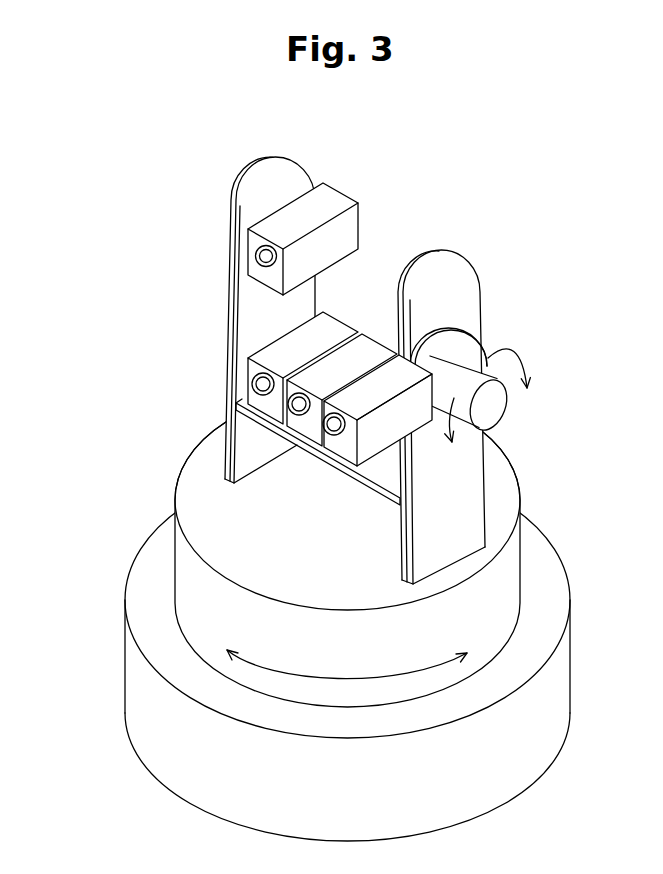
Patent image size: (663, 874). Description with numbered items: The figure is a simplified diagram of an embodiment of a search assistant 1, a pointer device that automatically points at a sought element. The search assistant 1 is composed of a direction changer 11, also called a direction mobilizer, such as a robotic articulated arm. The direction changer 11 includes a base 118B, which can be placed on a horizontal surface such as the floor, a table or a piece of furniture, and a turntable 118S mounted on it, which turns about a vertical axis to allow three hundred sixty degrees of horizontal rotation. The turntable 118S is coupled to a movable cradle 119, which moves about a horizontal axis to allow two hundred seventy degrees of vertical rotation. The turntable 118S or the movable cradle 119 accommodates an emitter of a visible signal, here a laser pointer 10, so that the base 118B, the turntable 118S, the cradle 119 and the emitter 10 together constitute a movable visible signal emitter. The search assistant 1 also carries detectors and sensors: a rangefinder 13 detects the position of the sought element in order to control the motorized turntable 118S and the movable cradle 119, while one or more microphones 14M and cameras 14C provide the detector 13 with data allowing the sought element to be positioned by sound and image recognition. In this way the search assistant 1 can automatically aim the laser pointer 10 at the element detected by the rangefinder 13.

The search assistant 1 is at (340, 498).
The laser pointer 10 is at (297, 389).
The direction changer 11 is at (340, 498).
The rangefinder 13 is at (300, 456).
The microphone 14M is at (270, 277).
The camera 14C is at (292, 341).
The turntable 118S is at (192, 492).
The base 118B is at (132, 668).
The cradle 119 is at (479, 417).